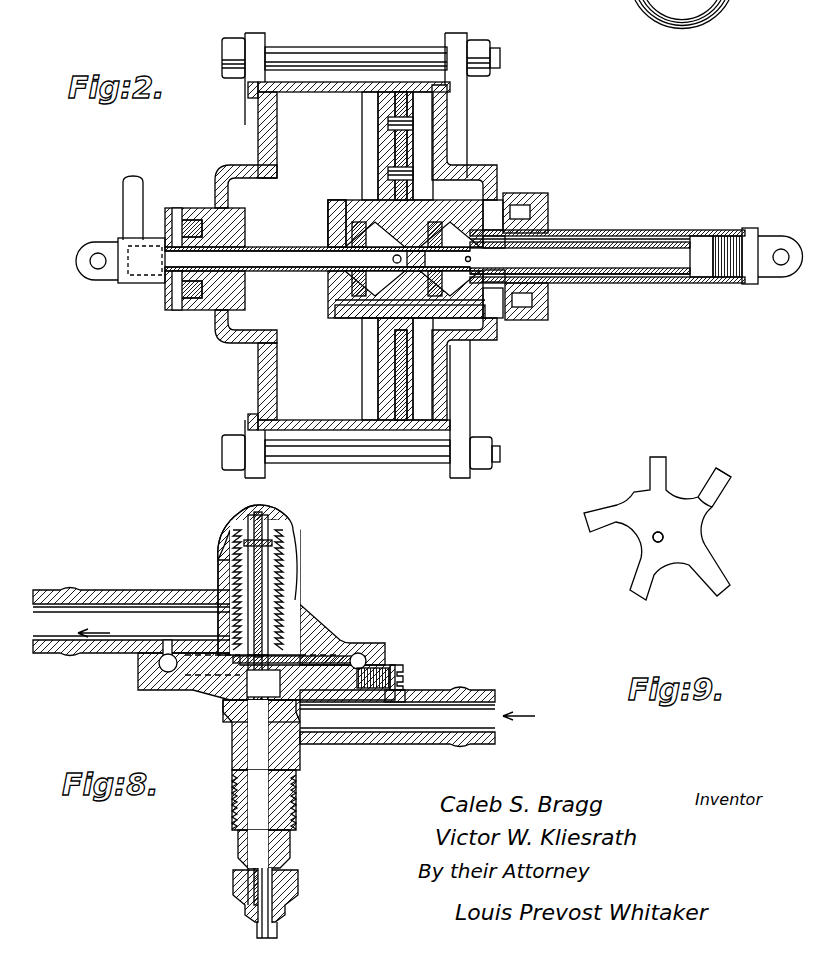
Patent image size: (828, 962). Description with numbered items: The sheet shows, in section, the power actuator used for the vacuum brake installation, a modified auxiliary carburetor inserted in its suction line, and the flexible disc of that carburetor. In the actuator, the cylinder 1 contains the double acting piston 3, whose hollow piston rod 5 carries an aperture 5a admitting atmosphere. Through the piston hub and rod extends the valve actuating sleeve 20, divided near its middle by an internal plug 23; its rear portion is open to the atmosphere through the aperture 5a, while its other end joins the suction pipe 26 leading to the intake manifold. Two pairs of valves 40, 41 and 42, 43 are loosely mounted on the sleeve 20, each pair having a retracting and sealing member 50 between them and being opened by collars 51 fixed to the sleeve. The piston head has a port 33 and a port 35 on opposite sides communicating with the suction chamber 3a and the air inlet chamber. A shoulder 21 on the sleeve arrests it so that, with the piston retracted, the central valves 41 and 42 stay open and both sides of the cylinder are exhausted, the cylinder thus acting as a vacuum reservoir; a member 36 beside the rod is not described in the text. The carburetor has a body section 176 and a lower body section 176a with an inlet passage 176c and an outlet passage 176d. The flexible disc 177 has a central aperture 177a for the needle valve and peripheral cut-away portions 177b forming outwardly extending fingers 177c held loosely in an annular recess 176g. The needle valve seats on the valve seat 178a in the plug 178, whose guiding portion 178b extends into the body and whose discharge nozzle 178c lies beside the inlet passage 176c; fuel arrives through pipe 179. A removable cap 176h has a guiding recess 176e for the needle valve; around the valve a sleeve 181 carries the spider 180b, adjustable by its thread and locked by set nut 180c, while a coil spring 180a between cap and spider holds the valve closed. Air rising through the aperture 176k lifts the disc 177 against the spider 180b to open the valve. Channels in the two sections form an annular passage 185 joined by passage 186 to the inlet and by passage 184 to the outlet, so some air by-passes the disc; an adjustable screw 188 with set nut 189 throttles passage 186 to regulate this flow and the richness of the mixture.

In FIG. 2, the cylinder 1 is at (330, 83).
In FIG. 2, the double acting piston 3 is at (378, 136).
In FIG. 2, the suction chamber 3a is at (375, 262).
In FIG. 2, the hollow piston rod 5 is at (633, 238).
In FIG. 2, the aperture 5a is at (708, 233).
In FIG. 2, the valve actuating sleeve 20 is at (287, 228).
In FIG. 2, the shoulder 21 is at (160, 286).
In FIG. 2, the internal plug 23 is at (367, 318).
In FIG. 2, the suction pipe 26 is at (137, 202).
In FIG. 2, the port 33 is at (325, 225).
In FIG. 2, the port 35 is at (438, 195).
In FIG. 2, the bearing block 36 is at (500, 190).
In FIG. 2, the valve 40 is at (335, 215).
In FIG. 2, the valve 41 is at (356, 216).
In FIG. 2, the valve 42 is at (452, 215).
In FIG. 2, the valve 43 is at (478, 205).
In FIG. 2, the retracting and sealing member 50 is at (337, 200).
In FIG. 2, the collar 51 is at (518, 215).
In FIG. 8, the body section 176 is at (292, 655).
In FIG. 8, the lower body section 176a is at (240, 700).
In FIG. 8, the inlet passage 176c is at (410, 730).
In FIG. 8, the outlet passage 176d is at (55, 637).
In FIG. 8, the guiding recess 176e is at (289, 522).
In FIG. 8, the annular recess 176g is at (372, 645).
In FIG. 8, the removable cap 176h is at (248, 518).
In FIG. 8, the aperture 176k is at (224, 722).
In FIG. 8, the flexible disc 177 is at (308, 660).
In FIG. 9, the flexible disc 177 is at (628, 535).
In FIG. 9, the central aperture 177a is at (664, 538).
In FIG. 9, the cut-away portion 177b is at (620, 512).
In FIG. 9, the finger 177c is at (720, 510).
In FIG. 8, the plug 178 is at (292, 848).
In FIG. 8, the valve seat 178a is at (296, 860).
In FIG. 8, the guiding portion 178b is at (280, 790).
In FIG. 8, the discharge nozzle 178c is at (307, 735).
In FIG. 8, the fuel supply pipe 179 is at (270, 930).
In FIG. 8, the coil spring 180a is at (290, 562).
In FIG. 8, the spider 180b is at (340, 656).
In FIG. 8, the set nut 180c is at (237, 548).
In FIG. 8, the sleeve 181 is at (303, 584).
In FIG. 8, the passage 184 is at (170, 648).
In FIG. 8, the annular passage 185 is at (168, 673).
In FIG. 8, the passage 186 is at (412, 692).
In FIG. 8, the adjustable screw 188 is at (410, 682).
In FIG. 8, the set nut 189 is at (393, 668).